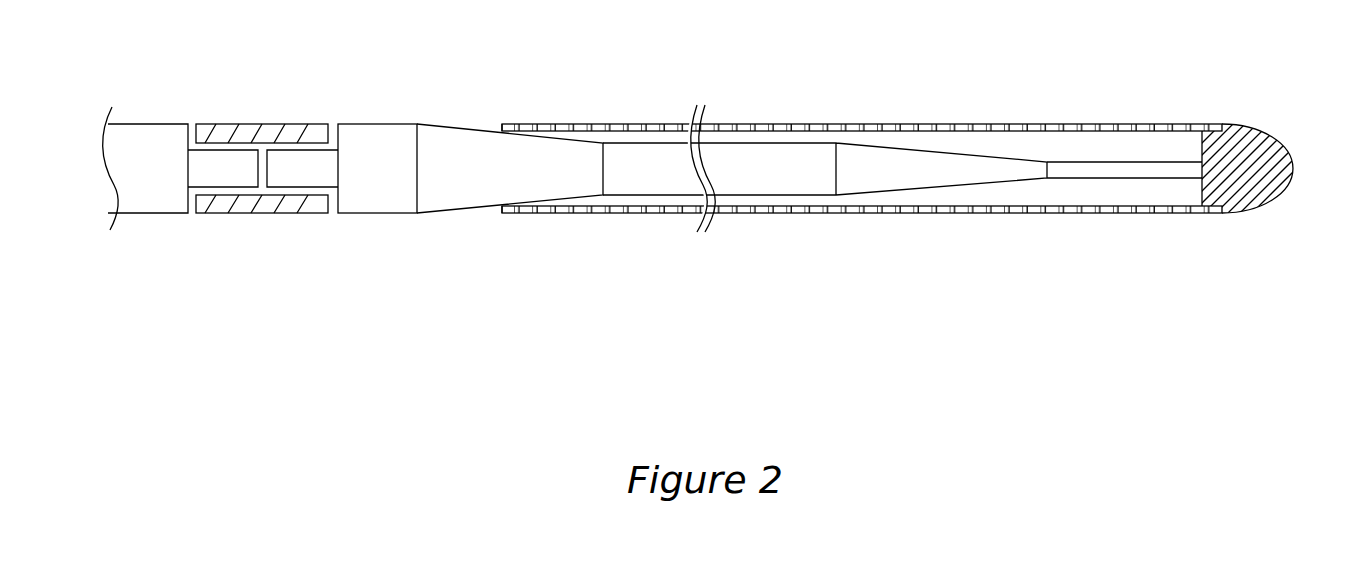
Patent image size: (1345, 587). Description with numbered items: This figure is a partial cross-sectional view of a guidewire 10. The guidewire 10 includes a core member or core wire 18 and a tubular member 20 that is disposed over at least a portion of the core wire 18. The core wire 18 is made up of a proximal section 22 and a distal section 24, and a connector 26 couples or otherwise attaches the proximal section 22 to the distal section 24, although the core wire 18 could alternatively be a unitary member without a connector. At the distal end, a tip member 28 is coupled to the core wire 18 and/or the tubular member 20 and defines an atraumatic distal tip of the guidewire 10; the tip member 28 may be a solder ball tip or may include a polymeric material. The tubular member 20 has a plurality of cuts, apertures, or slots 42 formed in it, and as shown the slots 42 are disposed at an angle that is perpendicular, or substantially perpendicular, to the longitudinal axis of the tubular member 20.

The guidewire 10 is at (515, 63).
The core wire 18 is at (438, 125).
The tubular member 20 is at (978, 122).
The proximal section 22 is at (153, 133).
The distal section 24 is at (897, 178).
The connector 26 is at (270, 132).
The tip member 28 is at (1267, 137).
The slots 42 is at (677, 127).